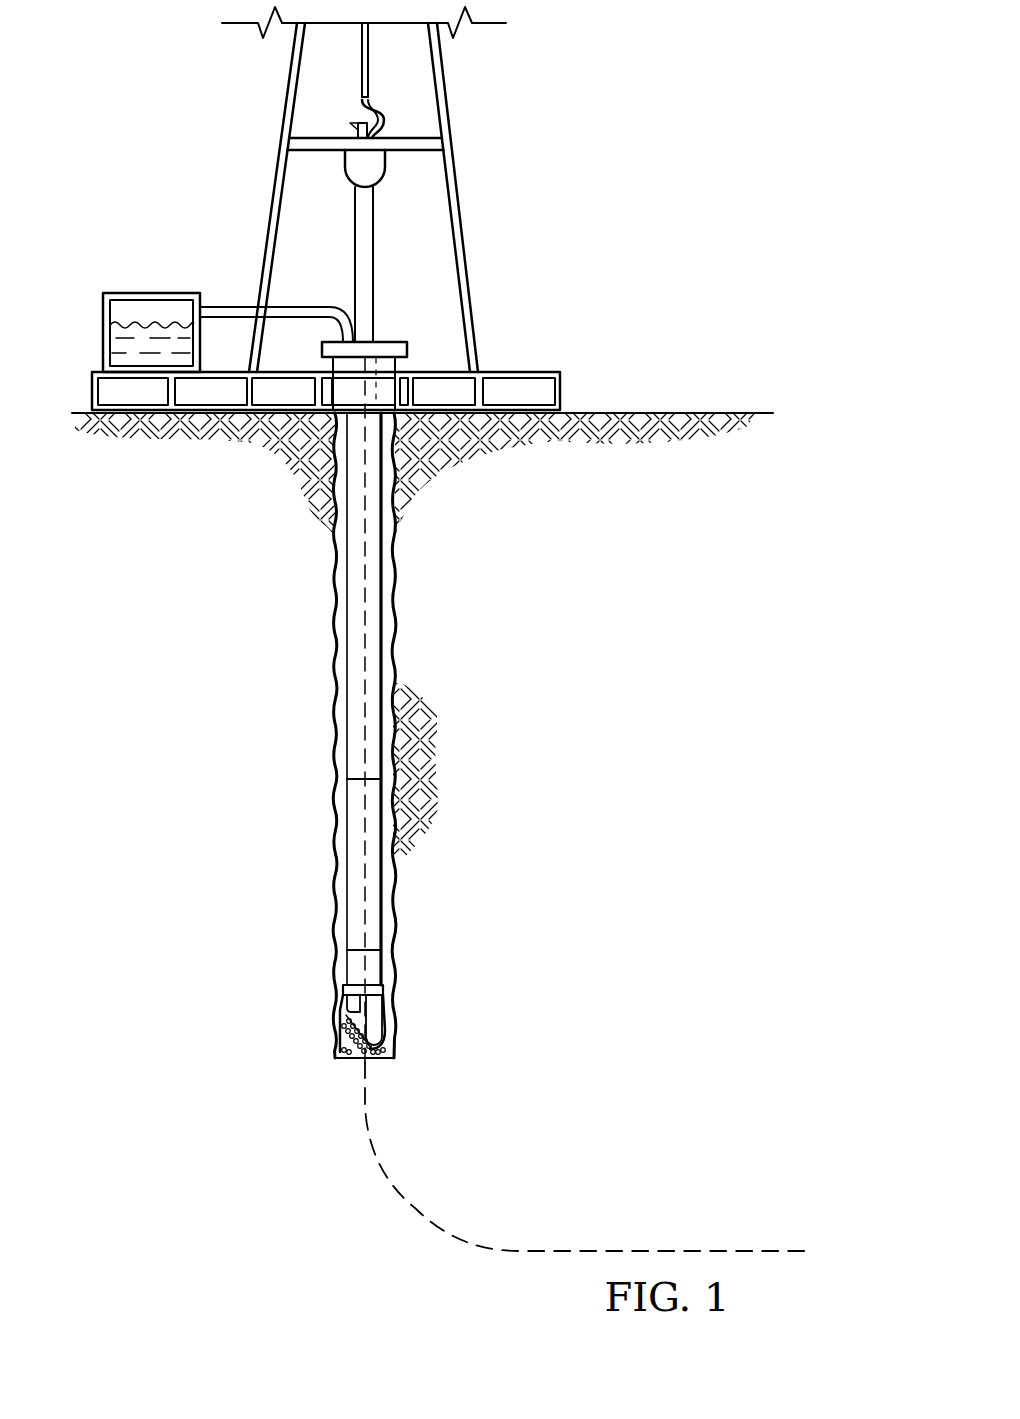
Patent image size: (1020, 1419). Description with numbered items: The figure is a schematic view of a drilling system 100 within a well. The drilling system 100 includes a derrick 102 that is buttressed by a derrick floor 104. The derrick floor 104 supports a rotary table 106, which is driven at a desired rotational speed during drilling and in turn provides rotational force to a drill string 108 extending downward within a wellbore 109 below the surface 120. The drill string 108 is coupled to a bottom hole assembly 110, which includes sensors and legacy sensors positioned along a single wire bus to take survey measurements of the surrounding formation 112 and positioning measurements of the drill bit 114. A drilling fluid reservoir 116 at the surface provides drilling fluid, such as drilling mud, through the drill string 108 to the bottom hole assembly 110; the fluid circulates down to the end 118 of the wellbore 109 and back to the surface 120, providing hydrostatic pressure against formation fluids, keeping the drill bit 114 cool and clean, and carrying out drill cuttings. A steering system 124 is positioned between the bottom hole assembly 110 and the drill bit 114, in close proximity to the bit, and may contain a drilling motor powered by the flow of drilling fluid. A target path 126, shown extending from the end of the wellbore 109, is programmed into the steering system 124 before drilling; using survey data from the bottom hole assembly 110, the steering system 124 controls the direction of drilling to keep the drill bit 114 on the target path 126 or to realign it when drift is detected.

The drilling system 100 is at (203, 175).
The derrick 102 is at (464, 228).
The derrick floor 104 is at (513, 372).
The rotary table 106 is at (393, 342).
The drill string 108 is at (355, 591).
The wellbore 109 is at (395, 636).
The bottom hole assembly 110 is at (355, 864).
The formation 112 is at (152, 619).
The drill bit 114 is at (383, 1021).
The drilling fluid reservoir 116 is at (150, 293).
The end of the wellbore 118 is at (347, 1060).
The surface 120 is at (650, 412).
The steering system 124 is at (355, 971).
The target path 126 is at (380, 1156).